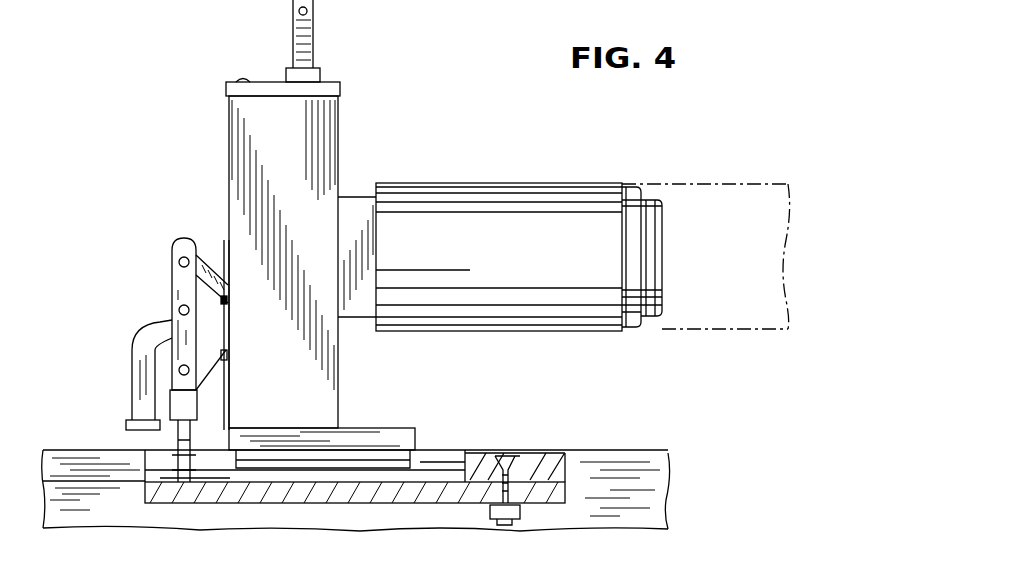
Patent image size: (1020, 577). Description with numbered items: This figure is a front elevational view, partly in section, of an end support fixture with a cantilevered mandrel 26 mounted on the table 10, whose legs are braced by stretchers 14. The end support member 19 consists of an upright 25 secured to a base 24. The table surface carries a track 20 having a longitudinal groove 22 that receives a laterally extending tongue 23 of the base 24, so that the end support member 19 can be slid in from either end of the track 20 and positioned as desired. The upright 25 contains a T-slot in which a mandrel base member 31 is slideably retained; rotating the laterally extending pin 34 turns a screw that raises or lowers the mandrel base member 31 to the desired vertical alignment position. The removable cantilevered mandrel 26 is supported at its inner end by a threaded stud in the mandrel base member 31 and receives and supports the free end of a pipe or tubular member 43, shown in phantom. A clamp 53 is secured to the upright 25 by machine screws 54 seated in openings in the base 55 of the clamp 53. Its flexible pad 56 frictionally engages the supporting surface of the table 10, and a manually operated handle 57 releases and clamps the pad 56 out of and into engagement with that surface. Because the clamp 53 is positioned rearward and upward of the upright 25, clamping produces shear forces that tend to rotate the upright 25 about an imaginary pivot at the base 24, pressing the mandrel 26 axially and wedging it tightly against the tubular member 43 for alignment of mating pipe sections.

The table 10 is at (181, 492).
The stretchers 14 is at (82, 465).
The end support member 19 is at (346, 128).
The track 20 is at (560, 453).
The longitudinal groove 22 is at (438, 460).
The tongues 23 is at (350, 450).
The base 24 is at (388, 450).
The upright 25 is at (258, 146).
The cantilevered mandrel 26 is at (520, 183).
The mandrel base member 31 is at (350, 197).
The laterally extending pin 34 is at (318, 14).
The tubular member 43 is at (790, 332).
The clamp 53 is at (160, 268).
The machine screws 54 is at (227, 300).
The base of the clamp 55 is at (228, 352).
The flexible pad 56 is at (150, 448).
The handle 57 is at (132, 398).